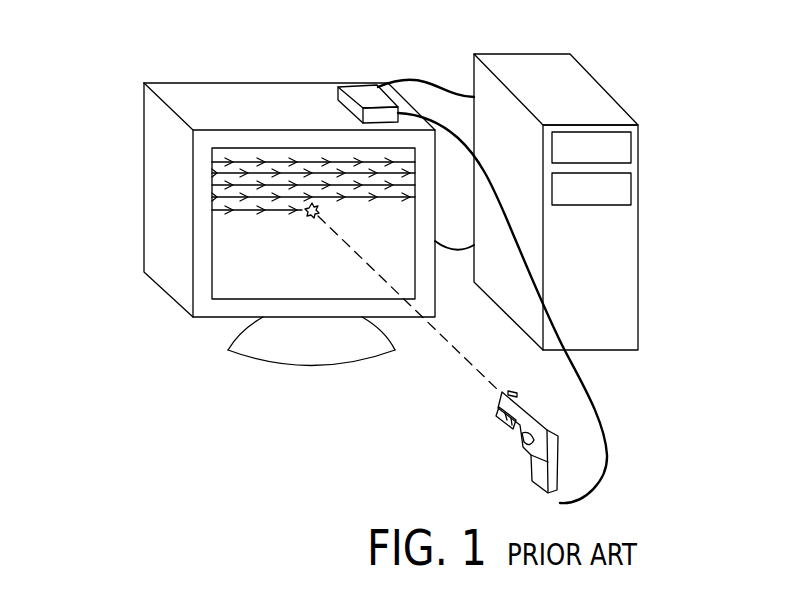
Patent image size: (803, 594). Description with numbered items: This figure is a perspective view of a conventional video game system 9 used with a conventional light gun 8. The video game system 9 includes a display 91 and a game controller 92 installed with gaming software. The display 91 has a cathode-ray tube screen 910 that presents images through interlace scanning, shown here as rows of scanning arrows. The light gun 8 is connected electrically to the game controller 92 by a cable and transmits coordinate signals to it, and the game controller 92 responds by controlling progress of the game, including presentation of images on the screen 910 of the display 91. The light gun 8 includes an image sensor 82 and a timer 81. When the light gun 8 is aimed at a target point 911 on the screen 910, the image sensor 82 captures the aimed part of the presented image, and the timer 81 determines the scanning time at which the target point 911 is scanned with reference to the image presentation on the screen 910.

The video game system 9 is at (128, 73).
The display 91 is at (270, 93).
The cathode-ray tube screen 910 is at (218, 225).
The target point 911 is at (308, 217).
The game controller 92 is at (585, 87).
The light gun 8 is at (476, 423).
The timer 81 is at (505, 425).
The image sensor 82 is at (500, 395).